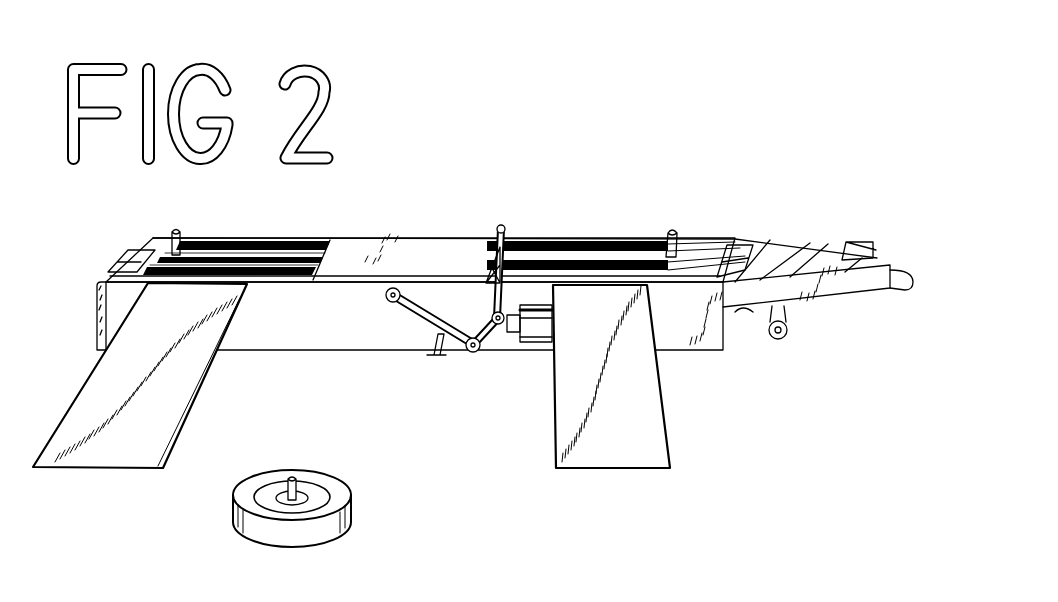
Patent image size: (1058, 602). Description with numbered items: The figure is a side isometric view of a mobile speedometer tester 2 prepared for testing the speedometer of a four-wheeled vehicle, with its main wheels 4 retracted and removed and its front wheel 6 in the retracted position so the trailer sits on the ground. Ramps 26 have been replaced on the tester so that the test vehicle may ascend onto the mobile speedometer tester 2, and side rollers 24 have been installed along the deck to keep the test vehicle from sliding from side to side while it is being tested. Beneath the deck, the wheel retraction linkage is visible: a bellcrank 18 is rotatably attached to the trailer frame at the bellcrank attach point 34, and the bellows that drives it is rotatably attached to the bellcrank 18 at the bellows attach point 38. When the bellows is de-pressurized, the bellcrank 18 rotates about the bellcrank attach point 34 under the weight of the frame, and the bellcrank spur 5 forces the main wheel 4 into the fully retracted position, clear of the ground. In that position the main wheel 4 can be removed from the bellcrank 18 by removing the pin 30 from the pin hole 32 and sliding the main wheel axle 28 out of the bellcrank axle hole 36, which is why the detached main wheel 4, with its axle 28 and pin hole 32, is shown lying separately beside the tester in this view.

The mobile speedometer tester 2 is at (509, 178).
The main wheel 4 is at (331, 485).
The bellcrank spur 5 is at (436, 338).
The front wheel 6 is at (790, 328).
The bellcrank 18 is at (398, 312).
The side roller 24 is at (179, 236).
The ramp 26 is at (85, 470).
The main wheel axle 28 is at (290, 476).
The pin 30 is at (362, 440).
The pin hole 32 is at (318, 487).
The bellcrank attach point 34 is at (478, 346).
The bellcrank axle hole 36 is at (418, 292).
The bellows attach point 38 is at (483, 320).